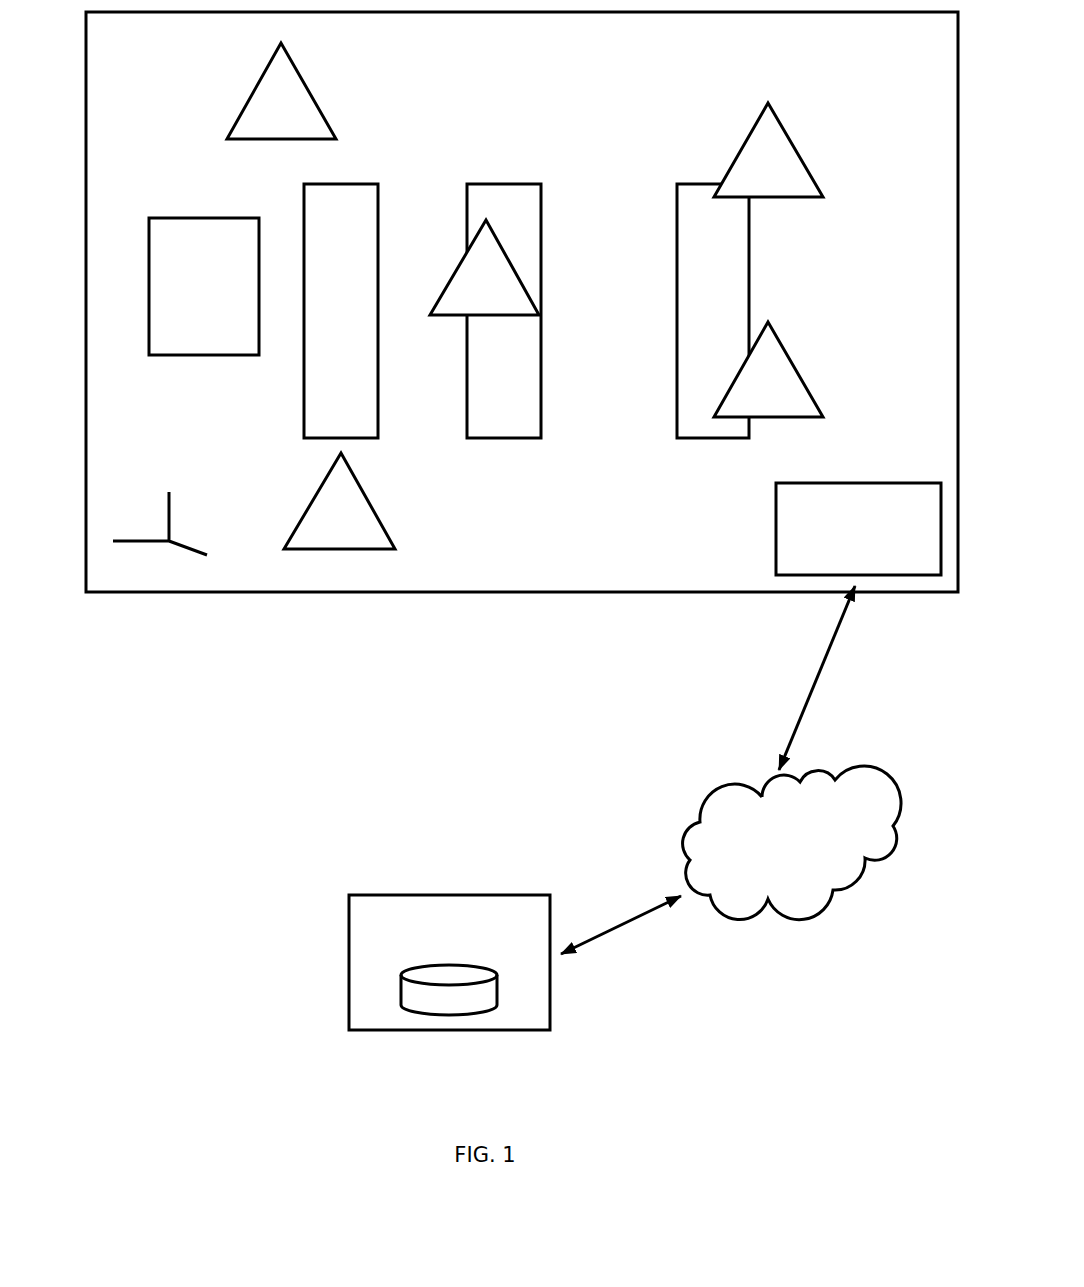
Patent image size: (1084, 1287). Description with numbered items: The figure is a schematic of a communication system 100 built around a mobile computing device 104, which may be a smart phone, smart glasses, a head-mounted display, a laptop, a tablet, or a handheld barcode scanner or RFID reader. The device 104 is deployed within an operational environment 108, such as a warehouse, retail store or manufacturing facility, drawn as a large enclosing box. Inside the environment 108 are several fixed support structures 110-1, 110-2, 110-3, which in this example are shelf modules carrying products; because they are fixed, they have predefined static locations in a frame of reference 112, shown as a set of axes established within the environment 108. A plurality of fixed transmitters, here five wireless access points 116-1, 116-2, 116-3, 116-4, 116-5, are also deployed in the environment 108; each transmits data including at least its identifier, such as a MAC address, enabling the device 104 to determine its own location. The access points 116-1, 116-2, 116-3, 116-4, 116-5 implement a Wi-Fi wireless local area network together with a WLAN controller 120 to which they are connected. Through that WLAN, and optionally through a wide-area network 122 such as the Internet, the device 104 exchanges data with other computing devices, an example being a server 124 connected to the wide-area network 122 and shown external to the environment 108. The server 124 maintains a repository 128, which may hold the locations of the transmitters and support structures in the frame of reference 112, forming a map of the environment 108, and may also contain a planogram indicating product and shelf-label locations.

The communication system 100 is at (158, 918).
The mobile computing device 104 is at (204, 286).
The operational environment 108 is at (417, 592).
The support structure 110-1 is at (357, 215).
The support structure 110-2 is at (513, 190).
The support structure 110-3 is at (712, 283).
The frame of reference 112 is at (160, 573).
The wireless access point 116-1 is at (316, 101).
The wireless access point 116-2 is at (372, 505).
The wireless access point 116-3 is at (520, 277).
The wireless access point 116-4 is at (752, 131).
The wireless access point 116-5 is at (724, 391).
The WLAN controller 120 is at (858, 529).
The wide-area network 122 is at (792, 843).
The server 124 is at (404, 962).
The repository 128 is at (399, 988).